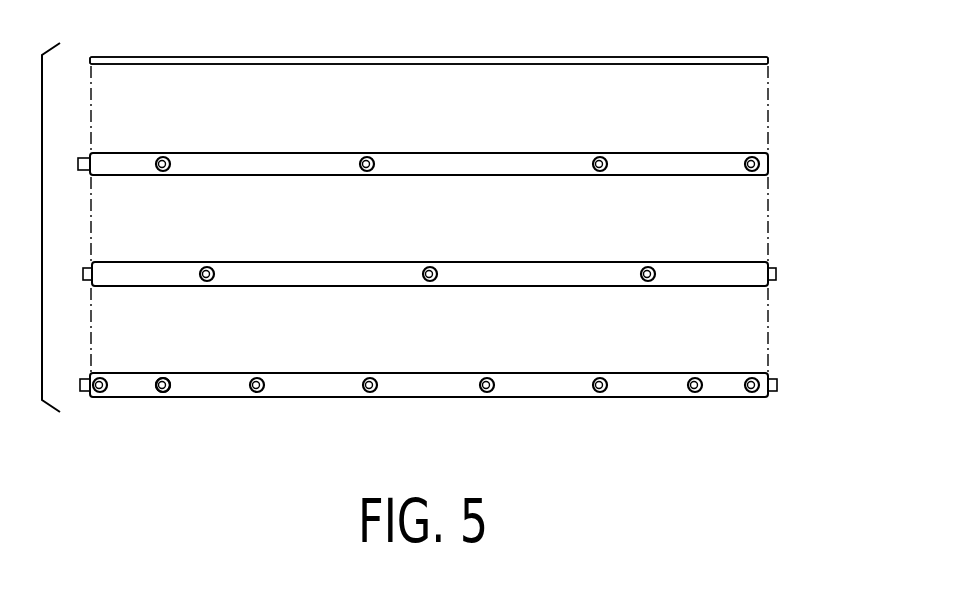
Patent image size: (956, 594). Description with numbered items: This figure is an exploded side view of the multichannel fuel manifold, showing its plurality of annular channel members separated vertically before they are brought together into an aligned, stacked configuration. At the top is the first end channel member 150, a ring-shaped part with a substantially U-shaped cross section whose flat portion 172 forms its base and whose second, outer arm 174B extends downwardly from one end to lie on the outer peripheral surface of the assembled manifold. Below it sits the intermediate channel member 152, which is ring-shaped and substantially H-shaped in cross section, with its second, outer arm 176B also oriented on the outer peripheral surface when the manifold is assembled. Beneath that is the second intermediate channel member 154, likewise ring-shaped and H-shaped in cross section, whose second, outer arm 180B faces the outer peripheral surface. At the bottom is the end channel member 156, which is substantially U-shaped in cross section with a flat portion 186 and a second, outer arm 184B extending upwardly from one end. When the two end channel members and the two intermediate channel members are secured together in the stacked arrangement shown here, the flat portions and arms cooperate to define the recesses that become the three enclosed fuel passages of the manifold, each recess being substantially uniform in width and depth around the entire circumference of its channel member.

The first end channel member 150 is at (768, 62).
The flat portion 172 is at (143, 58).
The second, outer arm 174B is at (677, 62).
The intermediate channel member 152 is at (770, 162).
The second, outer arm 176B is at (678, 164).
The intermediate channel member 154 is at (770, 266).
The second, outer arm 180B is at (676, 272).
The end channel member 156 is at (770, 377).
The second, outer arm 184B is at (668, 383).
The flat portion 186 is at (183, 398).